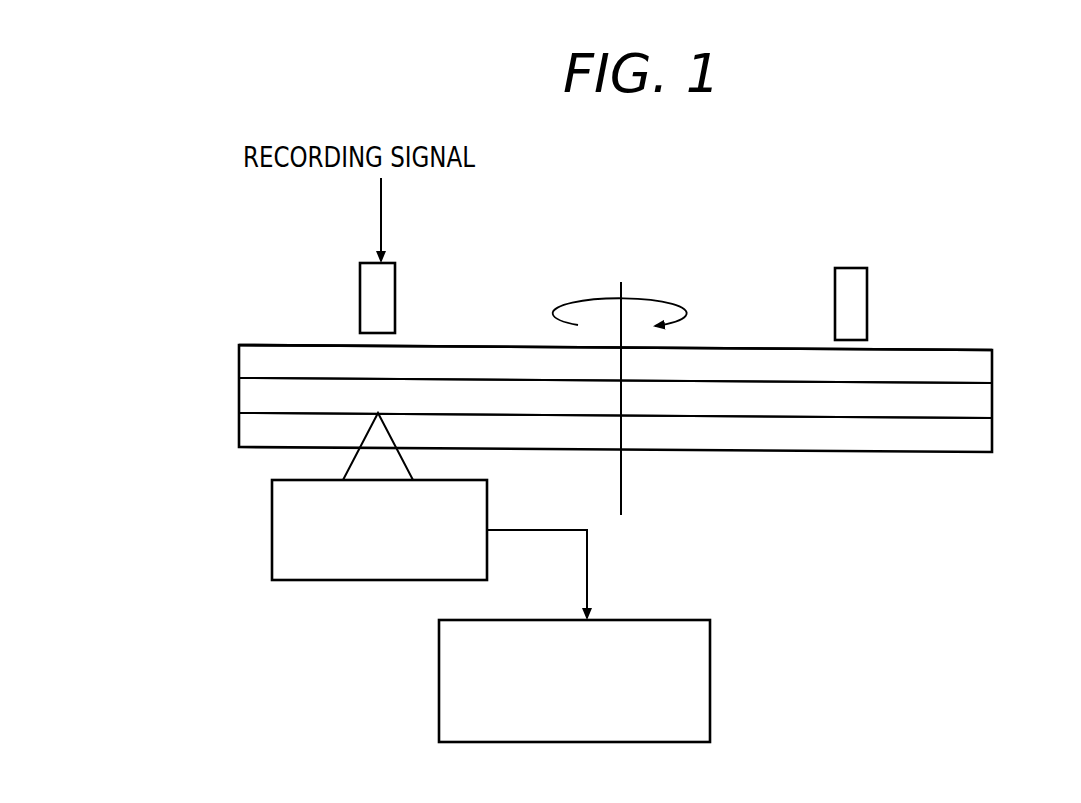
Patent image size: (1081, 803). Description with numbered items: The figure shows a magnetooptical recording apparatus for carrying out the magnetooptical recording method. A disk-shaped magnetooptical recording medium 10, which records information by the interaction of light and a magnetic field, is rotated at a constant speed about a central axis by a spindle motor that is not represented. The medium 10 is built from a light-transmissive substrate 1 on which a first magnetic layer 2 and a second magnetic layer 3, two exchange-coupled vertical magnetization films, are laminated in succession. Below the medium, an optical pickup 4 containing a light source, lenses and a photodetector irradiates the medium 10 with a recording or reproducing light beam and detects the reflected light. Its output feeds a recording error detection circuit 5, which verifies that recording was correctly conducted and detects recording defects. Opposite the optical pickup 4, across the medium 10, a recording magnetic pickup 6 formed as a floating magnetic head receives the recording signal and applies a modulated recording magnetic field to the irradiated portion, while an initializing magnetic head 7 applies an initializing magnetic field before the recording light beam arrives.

The magnetooptical recording medium 10 is at (178, 341).
The light-transmissive substrate 1 is at (994, 436).
The first magnetic layer 2 is at (994, 400).
The second magnetic layer 3 is at (994, 364).
The optical pickup 4 is at (295, 582).
The recording error detection circuit 5 is at (712, 643).
The recording magnetic pickup 6 is at (393, 278).
The initializing magnetic head 7 is at (862, 282).